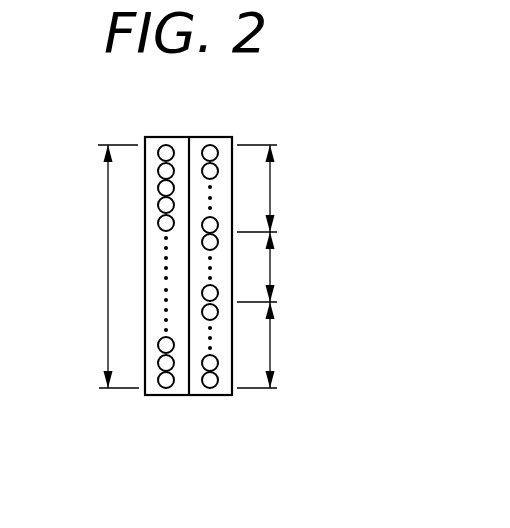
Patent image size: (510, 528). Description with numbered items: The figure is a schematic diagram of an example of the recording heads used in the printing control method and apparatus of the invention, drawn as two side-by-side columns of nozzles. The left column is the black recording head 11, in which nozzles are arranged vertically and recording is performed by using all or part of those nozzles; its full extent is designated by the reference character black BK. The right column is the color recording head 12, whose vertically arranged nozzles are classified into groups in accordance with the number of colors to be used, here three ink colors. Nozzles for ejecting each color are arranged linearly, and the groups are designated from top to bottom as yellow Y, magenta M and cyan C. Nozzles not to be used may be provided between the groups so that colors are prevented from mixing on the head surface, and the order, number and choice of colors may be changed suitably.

The black recording head 11 is at (158, 395).
The color recording head 12 is at (208, 395).
The black BK is at (101, 266).
The yellow Y is at (265, 188).
The magenta M is at (268, 267).
The cyan C is at (266, 345).